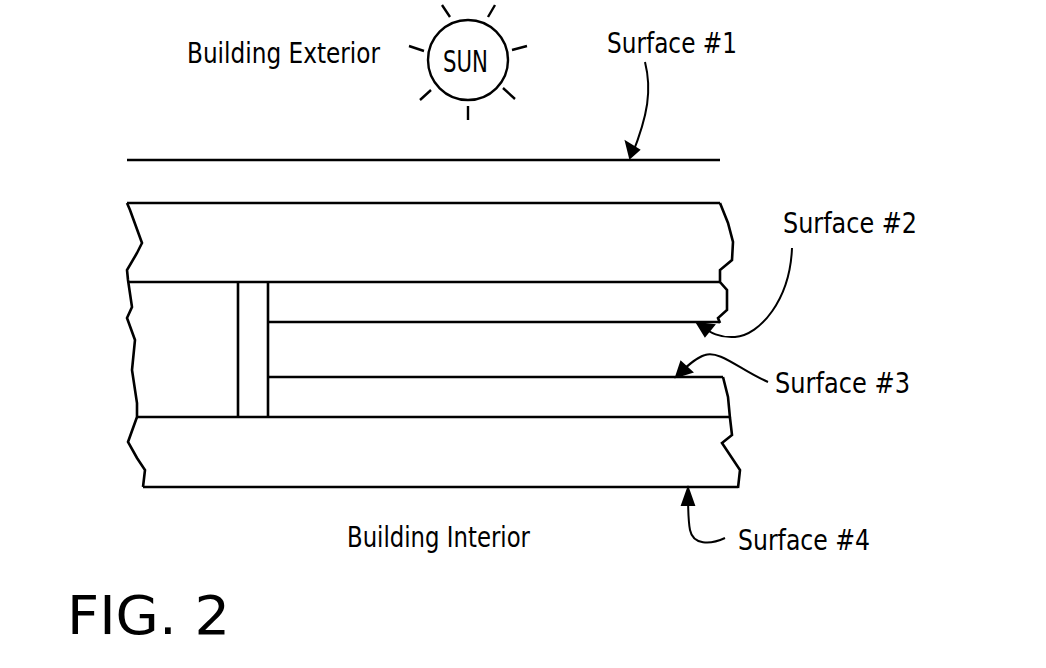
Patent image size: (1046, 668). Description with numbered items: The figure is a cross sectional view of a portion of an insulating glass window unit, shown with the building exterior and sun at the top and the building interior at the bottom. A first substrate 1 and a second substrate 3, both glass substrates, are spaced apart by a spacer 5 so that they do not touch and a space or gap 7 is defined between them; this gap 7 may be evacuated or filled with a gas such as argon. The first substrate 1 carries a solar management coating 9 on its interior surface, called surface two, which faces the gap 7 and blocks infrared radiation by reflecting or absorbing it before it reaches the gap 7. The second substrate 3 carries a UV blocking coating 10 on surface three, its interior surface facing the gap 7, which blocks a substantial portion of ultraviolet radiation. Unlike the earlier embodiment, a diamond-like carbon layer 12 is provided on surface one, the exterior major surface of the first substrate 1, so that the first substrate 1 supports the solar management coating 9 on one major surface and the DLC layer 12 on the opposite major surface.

The first substrate 1 is at (158, 258).
The second substrate 3 is at (165, 452).
The spacer 5 is at (158, 317).
The space or gap 7 is at (308, 345).
The solar management coating 9 is at (707, 303).
The UV blocking coating 10 is at (703, 400).
The diamond-like carbon (DLC) layer 12 is at (345, 183).